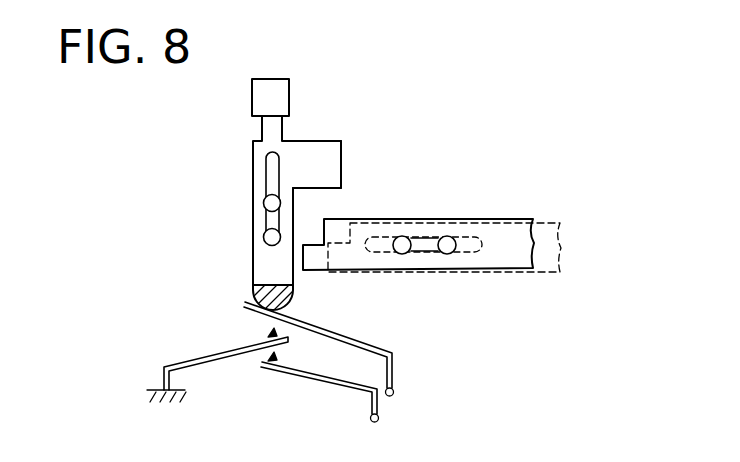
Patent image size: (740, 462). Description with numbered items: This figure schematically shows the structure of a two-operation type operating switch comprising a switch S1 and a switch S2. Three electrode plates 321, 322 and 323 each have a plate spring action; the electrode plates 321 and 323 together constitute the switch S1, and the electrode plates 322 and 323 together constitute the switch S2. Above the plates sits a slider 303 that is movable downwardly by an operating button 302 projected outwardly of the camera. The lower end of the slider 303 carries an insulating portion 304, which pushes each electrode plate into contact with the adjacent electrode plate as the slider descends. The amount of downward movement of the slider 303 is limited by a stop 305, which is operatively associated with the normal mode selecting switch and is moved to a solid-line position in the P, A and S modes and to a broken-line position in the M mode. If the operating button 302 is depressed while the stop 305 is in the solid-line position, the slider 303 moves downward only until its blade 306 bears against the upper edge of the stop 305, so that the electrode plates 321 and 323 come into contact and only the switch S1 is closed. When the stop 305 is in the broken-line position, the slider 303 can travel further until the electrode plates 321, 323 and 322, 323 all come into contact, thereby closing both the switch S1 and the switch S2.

The operating button 302 is at (289, 88).
The slider 303 is at (253, 160).
The insulating portion 304 is at (257, 293).
The stop 305 is at (508, 227).
The blade 306 is at (341, 155).
The electrode plate 321 is at (367, 341).
The electrode plate 322 is at (347, 391).
The electrode plate 323 is at (212, 355).
The switch S1 is at (317, 334).
The switch S2 is at (268, 370).